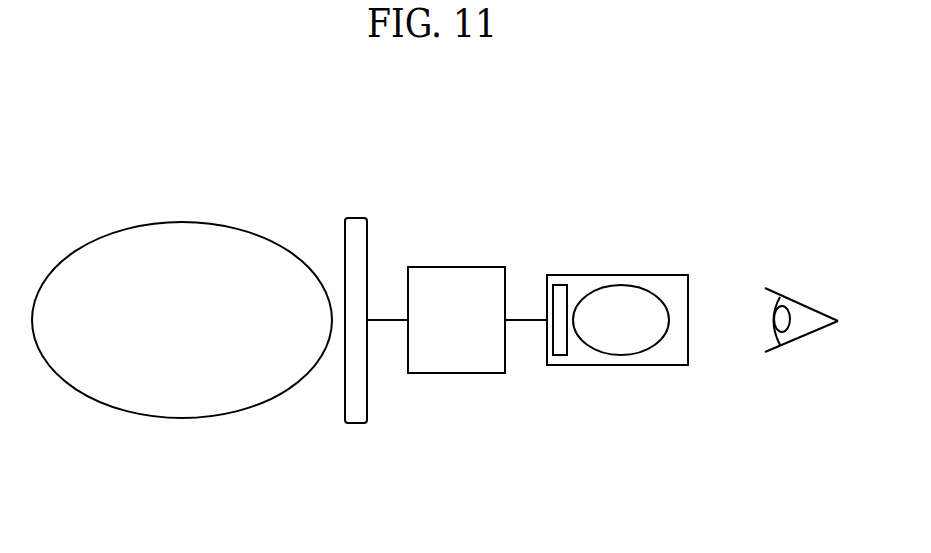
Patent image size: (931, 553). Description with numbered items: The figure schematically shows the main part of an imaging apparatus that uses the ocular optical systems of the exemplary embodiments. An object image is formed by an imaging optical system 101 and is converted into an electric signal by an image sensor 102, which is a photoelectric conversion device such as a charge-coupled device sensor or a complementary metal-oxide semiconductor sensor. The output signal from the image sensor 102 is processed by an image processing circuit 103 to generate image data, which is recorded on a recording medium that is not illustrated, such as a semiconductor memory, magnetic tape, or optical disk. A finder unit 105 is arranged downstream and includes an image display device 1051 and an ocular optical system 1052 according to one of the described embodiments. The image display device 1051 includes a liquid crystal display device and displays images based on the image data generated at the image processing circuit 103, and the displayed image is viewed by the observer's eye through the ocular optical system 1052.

The imaging optical system 101 is at (185, 220).
The image sensor 102 is at (357, 216).
The image processing circuit 103 is at (460, 266).
The finder unit 105 is at (617, 317).
The image display device 1051 is at (567, 348).
The ocular optical system 1052 is at (645, 352).